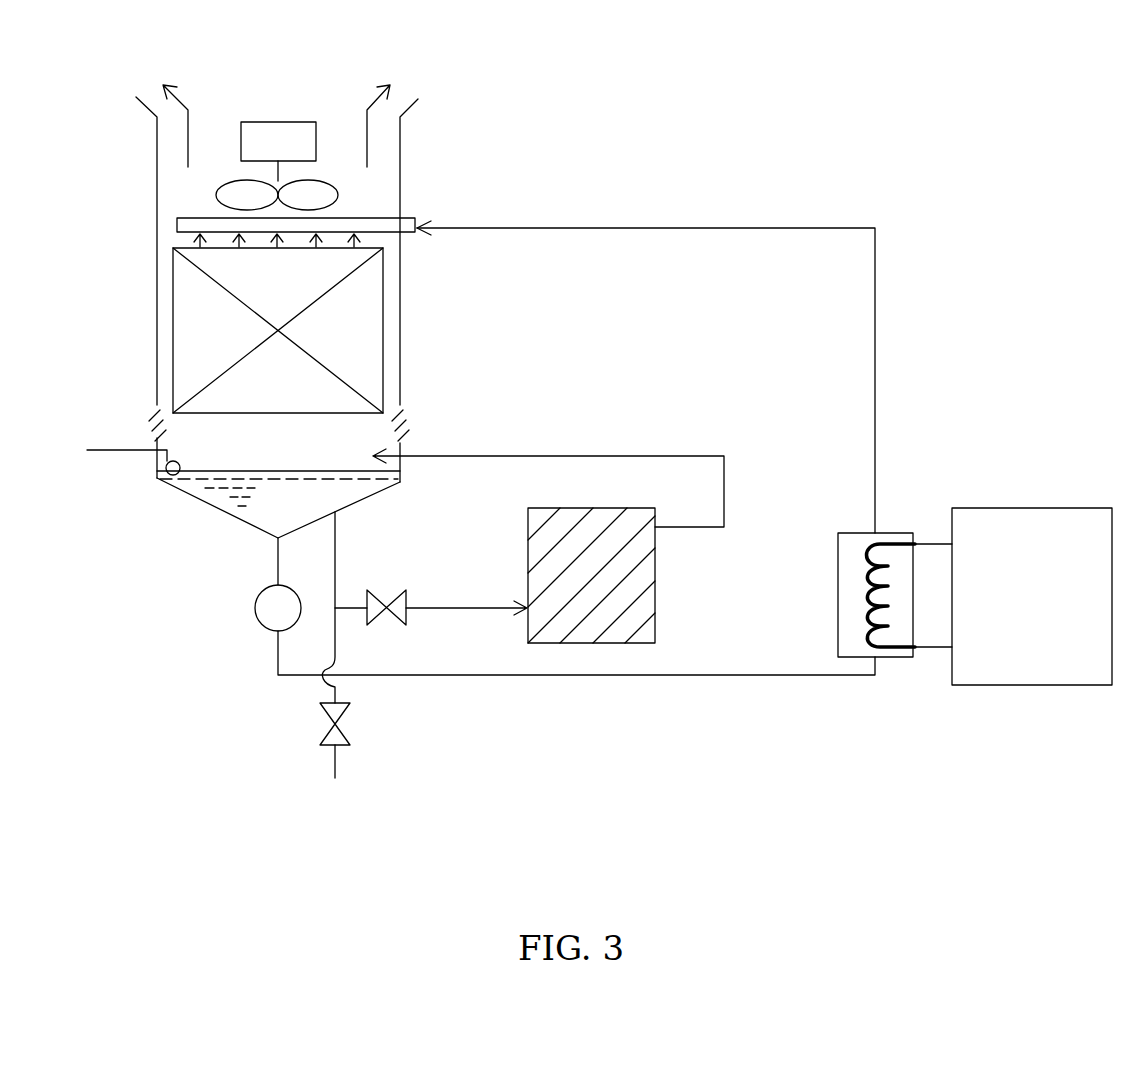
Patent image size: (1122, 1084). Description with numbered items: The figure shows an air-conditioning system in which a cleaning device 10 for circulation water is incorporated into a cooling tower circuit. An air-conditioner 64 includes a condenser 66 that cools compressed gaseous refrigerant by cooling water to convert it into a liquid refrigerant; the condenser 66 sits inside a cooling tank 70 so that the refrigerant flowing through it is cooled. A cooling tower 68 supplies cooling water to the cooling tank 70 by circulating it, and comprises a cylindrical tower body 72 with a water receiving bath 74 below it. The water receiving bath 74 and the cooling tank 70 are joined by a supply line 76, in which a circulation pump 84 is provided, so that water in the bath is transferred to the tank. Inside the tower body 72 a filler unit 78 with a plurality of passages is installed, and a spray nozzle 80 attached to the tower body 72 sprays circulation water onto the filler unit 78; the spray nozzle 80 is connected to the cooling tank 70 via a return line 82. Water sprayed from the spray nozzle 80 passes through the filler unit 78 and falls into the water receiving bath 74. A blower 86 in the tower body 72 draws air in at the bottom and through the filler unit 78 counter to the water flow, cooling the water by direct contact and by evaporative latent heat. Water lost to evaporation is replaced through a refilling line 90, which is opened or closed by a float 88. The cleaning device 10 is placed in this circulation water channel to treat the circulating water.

The cooling tower 68 is at (515, 162).
The tower body 72 is at (400, 275).
The blower 86 is at (340, 196).
The spray nozzle 80 is at (200, 218).
The filler unit 78 is at (383, 338).
The return line 82 is at (702, 229).
The water receiving bath 74 is at (365, 498).
The float 88 is at (181, 463).
The refilling line 90 is at (123, 452).
The circulation pump 84 is at (257, 617).
The supply line 76 is at (583, 675).
The cleaning device 10 is at (655, 595).
The cooling tank 70 is at (838, 605).
The condenser 66 is at (862, 573).
The air-conditioner 64 is at (1020, 508).